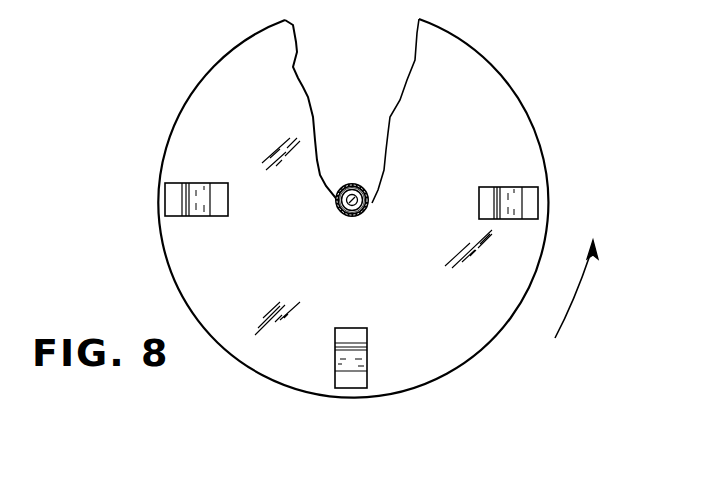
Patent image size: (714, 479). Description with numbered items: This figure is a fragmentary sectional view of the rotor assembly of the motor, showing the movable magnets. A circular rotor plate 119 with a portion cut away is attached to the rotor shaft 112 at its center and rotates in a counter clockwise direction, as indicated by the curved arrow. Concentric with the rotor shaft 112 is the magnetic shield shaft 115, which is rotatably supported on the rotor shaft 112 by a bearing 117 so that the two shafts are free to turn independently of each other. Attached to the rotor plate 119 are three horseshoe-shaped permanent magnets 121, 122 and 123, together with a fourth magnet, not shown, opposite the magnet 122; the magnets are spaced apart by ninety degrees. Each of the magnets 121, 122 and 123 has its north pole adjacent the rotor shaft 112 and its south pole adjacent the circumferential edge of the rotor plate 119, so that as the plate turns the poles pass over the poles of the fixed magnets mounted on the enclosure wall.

The rotor shaft 112 is at (360, 188).
The magnetic shield shaft 115 is at (335, 190).
The bearing 117 is at (352, 213).
The circular rotor plate 119 is at (483, 78).
The horseshoe-shaped permanent magnet 121 is at (187, 216).
The horseshoe-shaped permanent magnet 122 is at (337, 361).
The horseshoe-shaped permanent magnet 123 is at (512, 192).